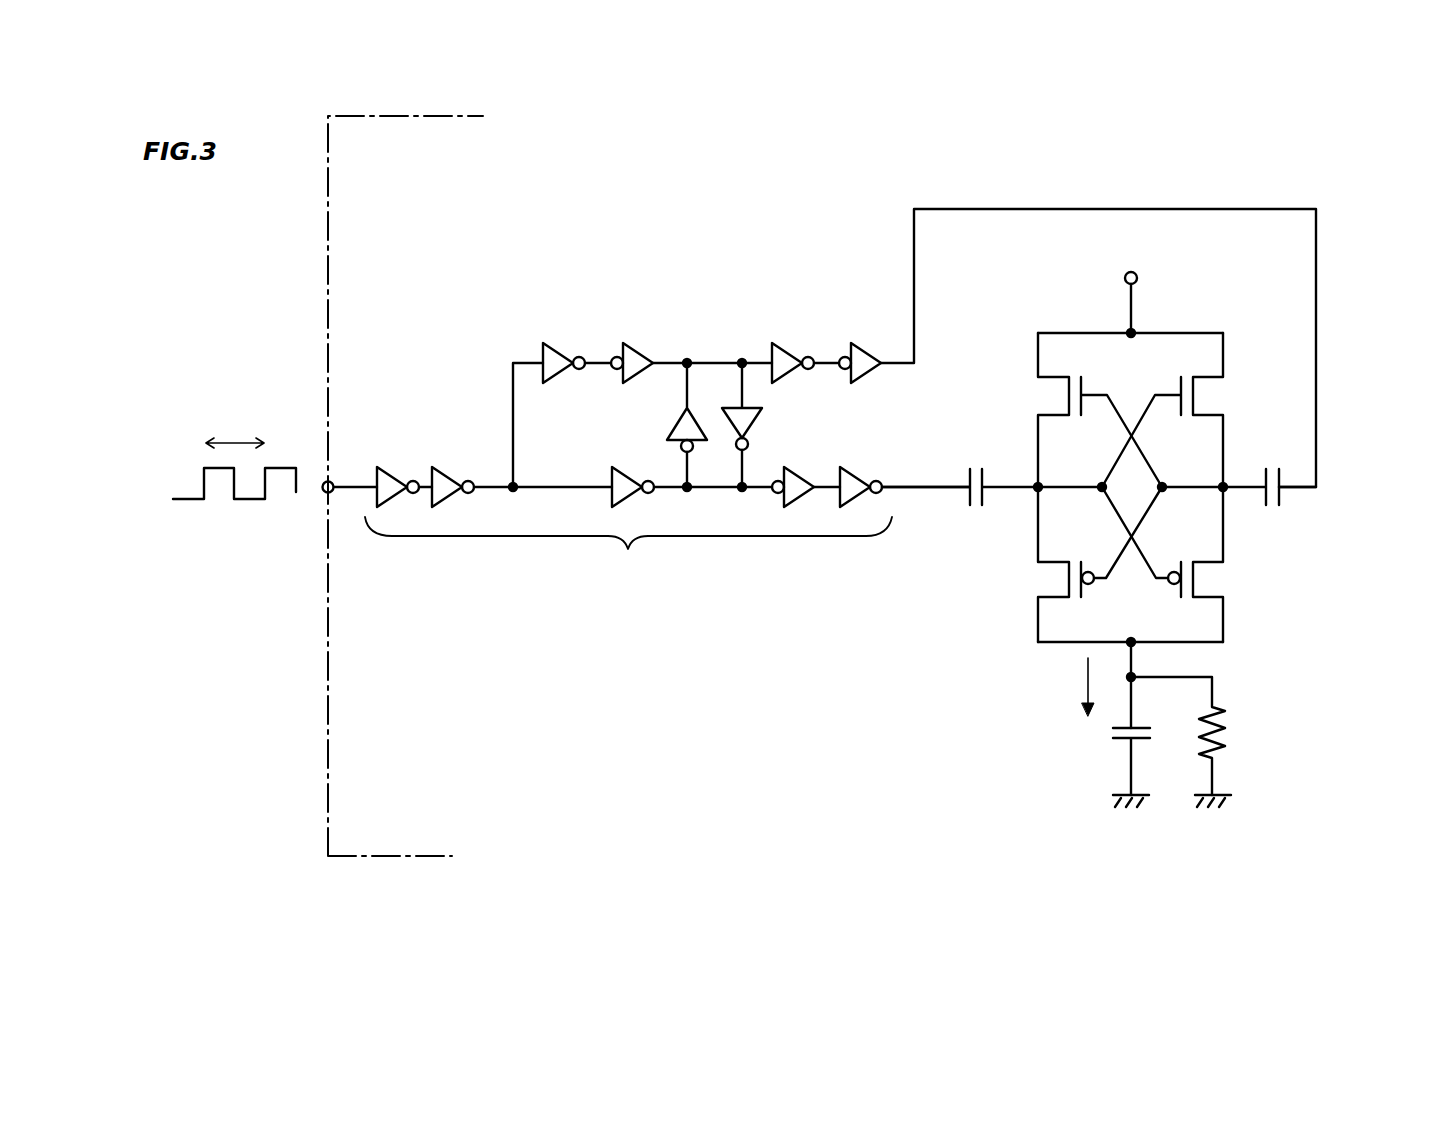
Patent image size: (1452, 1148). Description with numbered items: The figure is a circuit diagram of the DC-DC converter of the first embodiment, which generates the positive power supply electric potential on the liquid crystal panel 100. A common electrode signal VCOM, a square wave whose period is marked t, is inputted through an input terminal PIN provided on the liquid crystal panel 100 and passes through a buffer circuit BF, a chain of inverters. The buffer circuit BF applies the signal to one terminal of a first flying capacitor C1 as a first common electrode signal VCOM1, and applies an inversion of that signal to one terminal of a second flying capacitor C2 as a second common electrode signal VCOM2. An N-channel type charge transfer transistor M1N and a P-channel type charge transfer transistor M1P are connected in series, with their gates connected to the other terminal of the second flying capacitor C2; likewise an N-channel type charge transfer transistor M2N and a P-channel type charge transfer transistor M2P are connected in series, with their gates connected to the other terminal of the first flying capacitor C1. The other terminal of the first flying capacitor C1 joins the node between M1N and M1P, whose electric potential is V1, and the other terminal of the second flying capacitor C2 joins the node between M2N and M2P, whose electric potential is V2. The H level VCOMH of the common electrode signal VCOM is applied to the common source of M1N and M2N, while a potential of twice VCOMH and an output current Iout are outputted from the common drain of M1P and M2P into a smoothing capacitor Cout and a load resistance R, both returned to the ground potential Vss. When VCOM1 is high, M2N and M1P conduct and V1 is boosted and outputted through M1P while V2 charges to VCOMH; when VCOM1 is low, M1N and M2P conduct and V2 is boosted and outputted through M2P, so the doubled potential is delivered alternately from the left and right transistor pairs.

The liquid crystal panel 100 is at (362, 843).
The input terminal PIN is at (323, 491).
The common electrode signal VCOM is at (234, 502).
The period of VCOM signal t is at (235, 432).
The buffer circuit BF is at (825, 418).
The first common electrode signal VCOM1 is at (911, 482).
The second common electrode signal VCOM2 is at (1318, 453).
The H level of the common electrode signal VCOMH is at (1130, 288).
The first flying capacitor C1 is at (976, 463).
The second flying capacitor C2 is at (1272, 463).
The N-channel type charge transfer transistor M1N is at (1040, 390).
The N-channel type charge transfer transistor M2N is at (1222, 388).
The P-channel type charge transfer transistor M1P is at (1040, 581).
The P-channel type charge transfer transistor M2P is at (1222, 581).
The electric potential at the connecting node between M1N and M1P V1 is at (1030, 497).
The electric potential at the connecting node between M2N and M2P V2 is at (1233, 497).
The output current Iout is at (1065, 687).
The smoothing capacitor Cout is at (1105, 730).
The load resistance R is at (1235, 733).
The ground potential Vss is at (1169, 818).